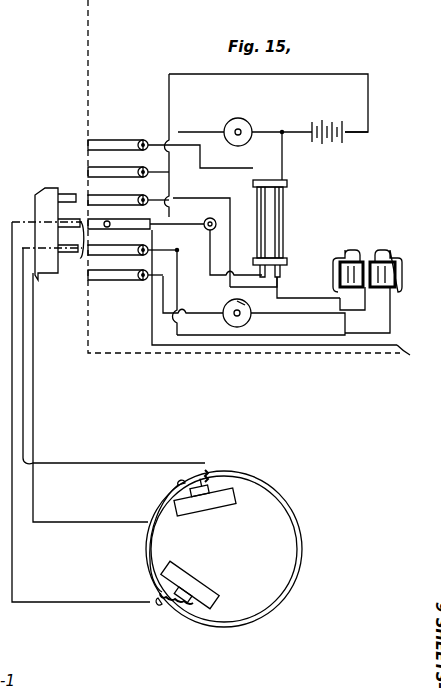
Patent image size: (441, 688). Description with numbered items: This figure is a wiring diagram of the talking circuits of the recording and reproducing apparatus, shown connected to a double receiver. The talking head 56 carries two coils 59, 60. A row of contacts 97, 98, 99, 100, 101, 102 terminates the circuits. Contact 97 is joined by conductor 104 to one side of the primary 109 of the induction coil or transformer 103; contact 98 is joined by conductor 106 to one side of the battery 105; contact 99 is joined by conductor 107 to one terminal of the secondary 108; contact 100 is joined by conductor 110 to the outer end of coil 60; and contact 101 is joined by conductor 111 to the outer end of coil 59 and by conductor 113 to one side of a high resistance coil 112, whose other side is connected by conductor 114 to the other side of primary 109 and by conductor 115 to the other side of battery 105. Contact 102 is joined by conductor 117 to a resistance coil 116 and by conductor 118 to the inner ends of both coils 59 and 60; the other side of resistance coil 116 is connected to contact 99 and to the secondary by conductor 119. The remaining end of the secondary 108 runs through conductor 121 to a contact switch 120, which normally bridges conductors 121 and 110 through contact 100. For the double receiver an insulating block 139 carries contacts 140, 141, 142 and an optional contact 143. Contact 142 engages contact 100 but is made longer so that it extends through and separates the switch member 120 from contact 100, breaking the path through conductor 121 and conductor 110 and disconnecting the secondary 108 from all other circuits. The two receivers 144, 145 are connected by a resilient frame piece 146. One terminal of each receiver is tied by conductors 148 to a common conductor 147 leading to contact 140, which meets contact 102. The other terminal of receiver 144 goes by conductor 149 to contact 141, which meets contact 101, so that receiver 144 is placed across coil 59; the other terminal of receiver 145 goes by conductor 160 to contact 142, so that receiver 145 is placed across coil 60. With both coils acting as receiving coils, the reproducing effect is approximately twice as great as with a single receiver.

The talking head 56 is at (367, 261).
The coil 59 is at (398, 272).
The coil 60 is at (343, 268).
The contact 97 is at (92, 150).
The contact 98 is at (108, 160).
The contact 99 is at (120, 200).
The contact 100 is at (100, 222).
The contact 101 is at (92, 245).
The contact 102 is at (105, 280).
The induction coil 103 is at (283, 222).
The conductor 104 is at (210, 170).
The battery 105 is at (338, 142).
The conductor 106 is at (368, 118).
The conductor 107 is at (230, 250).
The secondary 108 is at (290, 263).
The primary 109 is at (287, 183).
The conductor 110 is at (155, 325).
The conductor 111 is at (412, 354).
The high resistance coil 112 is at (250, 122).
The conductor 113 is at (192, 132).
The conductor 114 is at (282, 160).
The conductor 115 is at (312, 130).
The resistance coil 116 is at (232, 325).
The conductor 117 is at (200, 313).
The conductor 118 is at (270, 313).
The conductor 119 is at (290, 298).
The contact switch 120 is at (186, 230).
The conductor 121 is at (210, 258).
The insulating block 139 is at (42, 190).
The contact 140 is at (70, 270).
The contact 141 is at (70, 260).
The contact 142 is at (80, 222).
The contact 143 is at (75, 197).
The receiver 144 is at (230, 492).
The receiver 145 is at (195, 570).
The resilient frame piece 146 is at (302, 562).
The conductor 147 is at (45, 522).
The conductors 148 is at (158, 506).
The conductor 149 is at (98, 463).
The conductor 160 is at (45, 602).